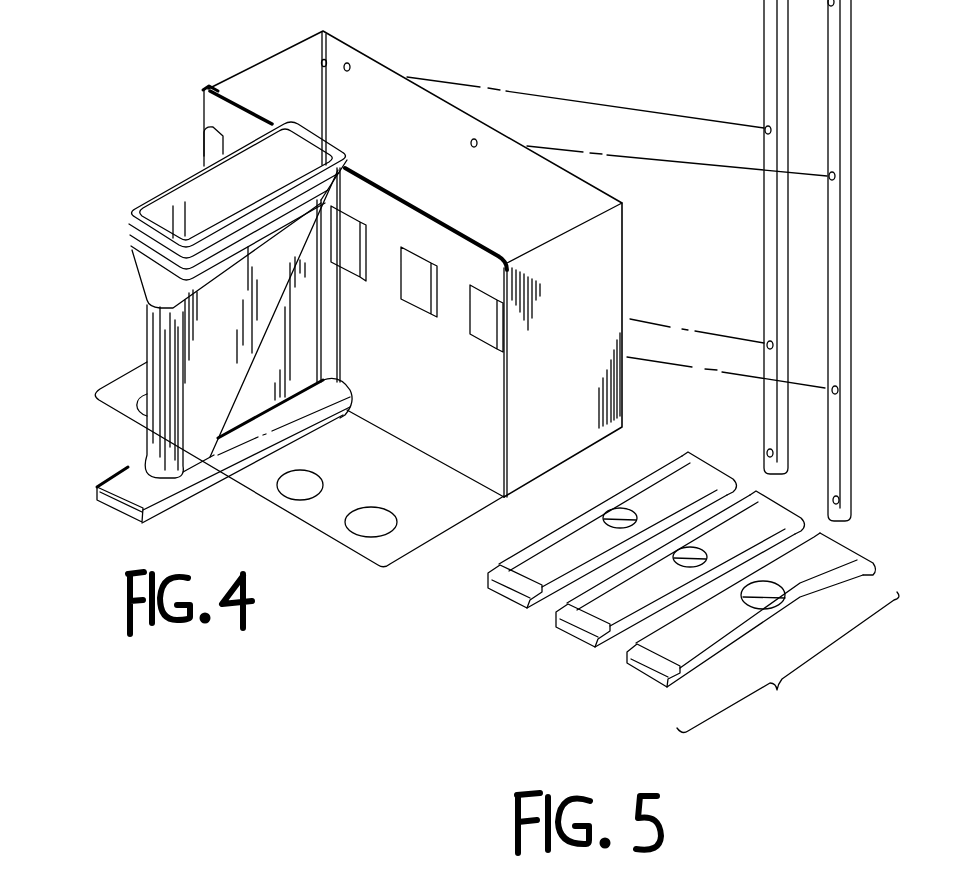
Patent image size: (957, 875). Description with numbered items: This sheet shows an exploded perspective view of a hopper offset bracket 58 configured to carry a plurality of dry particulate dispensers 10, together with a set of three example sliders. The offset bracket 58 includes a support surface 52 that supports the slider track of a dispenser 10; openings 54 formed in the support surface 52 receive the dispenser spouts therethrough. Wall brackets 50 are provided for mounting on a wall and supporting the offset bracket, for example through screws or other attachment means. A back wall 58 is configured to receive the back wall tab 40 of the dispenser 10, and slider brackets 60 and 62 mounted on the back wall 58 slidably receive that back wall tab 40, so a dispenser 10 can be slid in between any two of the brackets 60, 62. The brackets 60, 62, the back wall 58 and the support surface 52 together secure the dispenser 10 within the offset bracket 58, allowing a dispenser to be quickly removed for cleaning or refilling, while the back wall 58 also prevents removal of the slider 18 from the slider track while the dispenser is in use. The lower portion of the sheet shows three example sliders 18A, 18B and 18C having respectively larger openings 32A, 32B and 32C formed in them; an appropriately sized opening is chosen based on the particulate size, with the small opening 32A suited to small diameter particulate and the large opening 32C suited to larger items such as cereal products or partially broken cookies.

In FIG. 4, the dry particulate dispenser 10 is at (120, 195).
In FIG. 4, the slider 18 is at (95, 488).
In FIG. 4, the back wall tab 40 is at (345, 157).
In FIG. 4, the wall brackets 50 is at (270, 57).
In FIG. 4, the support surface 52 is at (305, 522).
In FIG. 4, the openings 54 is at (357, 518).
In FIG. 4, the hopper offset bracket / back wall 58 is at (478, 402).
In FIG. 4, the slider bracket 60 is at (476, 290).
In FIG. 4, the slider bracket 62 is at (559, 174).
In FIG. 5, the slider 18A is at (498, 597).
In FIG. 5, the slider 18B is at (560, 633).
In FIG. 5, the slider 18C is at (628, 670).
In FIG. 5, the small opening 32A is at (621, 510).
In FIG. 5, the opening 32B is at (690, 565).
In FIG. 5, the large opening 32C is at (770, 596).